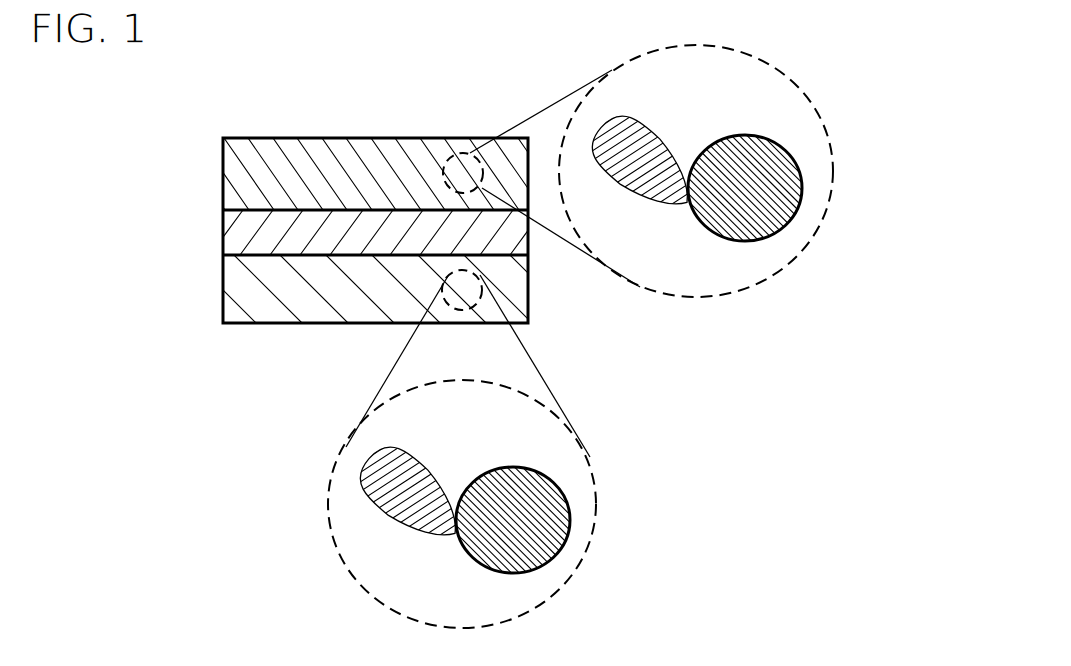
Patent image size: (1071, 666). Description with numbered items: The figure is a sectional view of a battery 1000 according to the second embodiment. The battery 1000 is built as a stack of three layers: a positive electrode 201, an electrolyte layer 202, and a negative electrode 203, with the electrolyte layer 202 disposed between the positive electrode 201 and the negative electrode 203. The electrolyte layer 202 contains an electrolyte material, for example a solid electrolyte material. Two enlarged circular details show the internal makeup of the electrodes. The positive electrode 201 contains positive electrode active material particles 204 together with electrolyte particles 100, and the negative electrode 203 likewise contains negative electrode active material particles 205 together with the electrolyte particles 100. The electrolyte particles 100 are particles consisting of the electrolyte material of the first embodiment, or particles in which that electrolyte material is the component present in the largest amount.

The battery 1000 is at (418, 90).
The positive electrode 201 is at (262, 160).
The electrolyte layer 202 is at (258, 230).
The negative electrode 203 is at (256, 288).
The electrolyte particles 100 is at (665, 199).
The positive electrode active material particles 204 is at (773, 191).
The negative electrode active material particles 205 is at (533, 513).